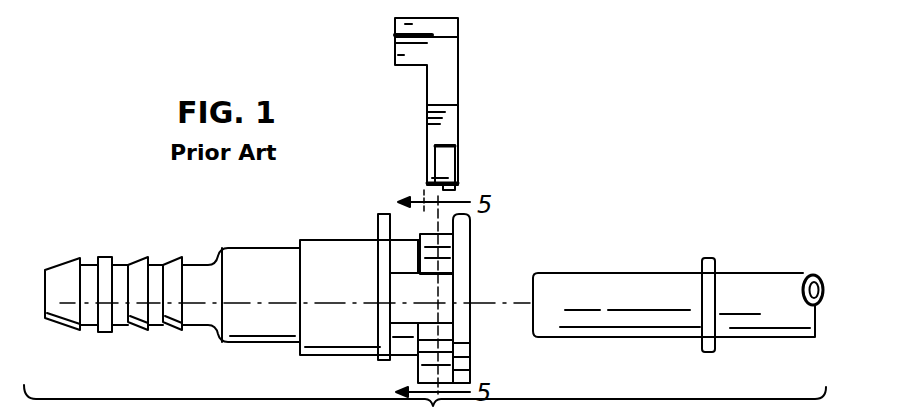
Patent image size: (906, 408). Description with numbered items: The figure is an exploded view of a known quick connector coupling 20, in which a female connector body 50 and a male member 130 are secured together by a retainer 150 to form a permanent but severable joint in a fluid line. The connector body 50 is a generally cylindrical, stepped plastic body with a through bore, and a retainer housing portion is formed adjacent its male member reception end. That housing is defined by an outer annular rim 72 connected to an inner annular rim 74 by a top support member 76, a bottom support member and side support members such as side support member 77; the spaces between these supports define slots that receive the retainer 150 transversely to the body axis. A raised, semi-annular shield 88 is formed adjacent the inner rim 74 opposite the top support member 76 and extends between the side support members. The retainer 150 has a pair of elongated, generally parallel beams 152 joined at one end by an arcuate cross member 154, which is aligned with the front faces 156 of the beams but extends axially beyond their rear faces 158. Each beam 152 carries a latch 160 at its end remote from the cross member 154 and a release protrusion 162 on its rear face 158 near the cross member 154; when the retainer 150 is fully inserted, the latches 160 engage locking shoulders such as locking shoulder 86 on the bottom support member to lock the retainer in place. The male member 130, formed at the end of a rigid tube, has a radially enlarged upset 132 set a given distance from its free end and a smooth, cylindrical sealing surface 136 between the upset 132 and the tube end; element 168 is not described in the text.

The hose connection assembly 20 is at (560, 197).
The female connector body 50 is at (240, 238).
The inner annular rim 74 is at (400, 237).
The side support member 77 is at (398, 303).
The semi-annular shield 88 is at (378, 215).
The locking shoulder 86 is at (410, 360).
The top support member 76 is at (471, 225).
The outer annular rim 72 is at (471, 257).
The retainer 150 is at (466, 77).
The cross member 154 is at (443, 13).
The release protrusion 162 is at (397, 55).
The rear face 158 is at (424, 85).
The front face 156 is at (462, 107).
The beam 152 is at (430, 108).
The clip latch 168 is at (456, 157).
The latch 160 is at (458, 186).
The male member 130 is at (755, 265).
The upset 132 is at (730, 232).
The sealing surface 136 is at (612, 330).